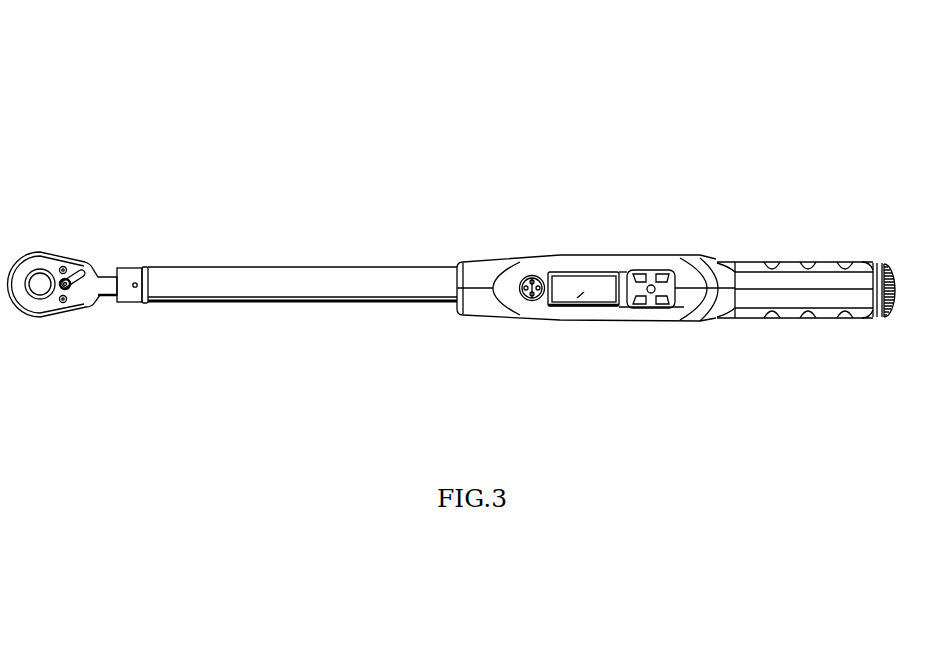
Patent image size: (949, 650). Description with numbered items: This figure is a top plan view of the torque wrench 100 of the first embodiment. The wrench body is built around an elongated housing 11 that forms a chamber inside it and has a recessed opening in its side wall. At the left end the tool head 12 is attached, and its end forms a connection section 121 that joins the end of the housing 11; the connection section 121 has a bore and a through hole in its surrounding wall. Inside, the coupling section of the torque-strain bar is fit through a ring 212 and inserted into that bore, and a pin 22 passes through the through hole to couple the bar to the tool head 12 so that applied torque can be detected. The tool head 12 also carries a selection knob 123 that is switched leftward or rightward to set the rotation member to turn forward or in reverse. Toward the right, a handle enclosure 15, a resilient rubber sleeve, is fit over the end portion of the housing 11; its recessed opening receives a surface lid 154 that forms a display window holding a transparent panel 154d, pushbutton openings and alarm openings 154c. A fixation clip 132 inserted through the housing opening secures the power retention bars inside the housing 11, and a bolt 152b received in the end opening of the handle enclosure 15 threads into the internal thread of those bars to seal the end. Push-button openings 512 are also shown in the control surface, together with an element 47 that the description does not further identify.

The torque wrench 100 is at (599, 101).
The tool head 12 is at (40, 303).
The selection knob 123 is at (73, 279).
The connection section 121 is at (130, 303).
The pin 22 is at (133, 283).
The ring 212 is at (143, 266).
The housing 11 is at (248, 277).
The fixation clip 132 is at (698, 320).
The surface lid 154 is at (590, 316).
The alarm openings 154c is at (530, 277).
The transparent panel 154d is at (577, 283).
The push-button openings 512 is at (650, 275).
The button 47 is at (637, 276).
The handle enclosure 15 is at (797, 312).
The bolt 152b is at (893, 291).